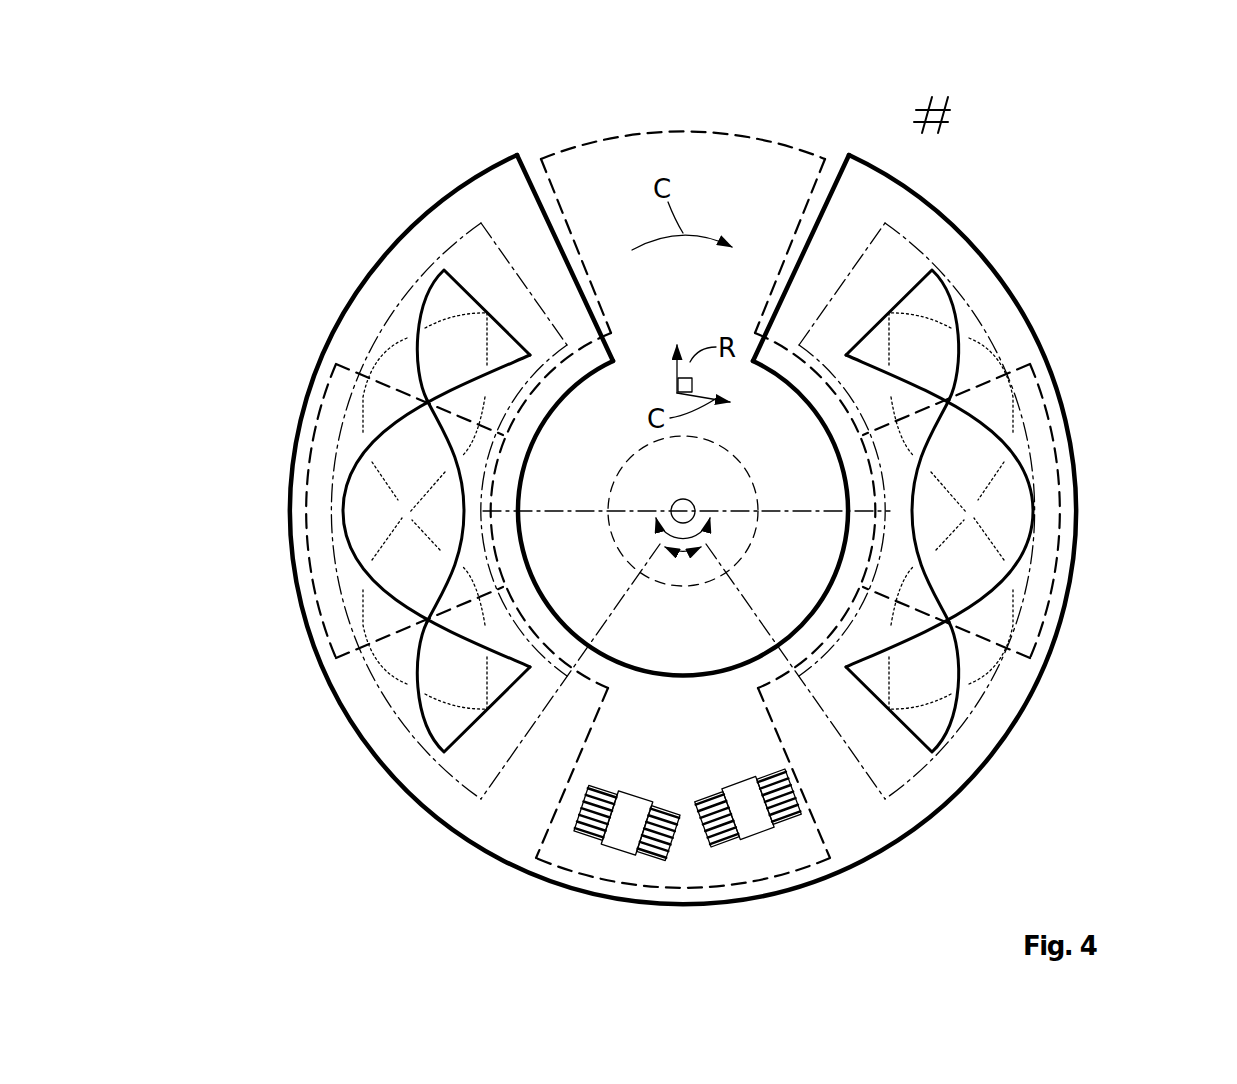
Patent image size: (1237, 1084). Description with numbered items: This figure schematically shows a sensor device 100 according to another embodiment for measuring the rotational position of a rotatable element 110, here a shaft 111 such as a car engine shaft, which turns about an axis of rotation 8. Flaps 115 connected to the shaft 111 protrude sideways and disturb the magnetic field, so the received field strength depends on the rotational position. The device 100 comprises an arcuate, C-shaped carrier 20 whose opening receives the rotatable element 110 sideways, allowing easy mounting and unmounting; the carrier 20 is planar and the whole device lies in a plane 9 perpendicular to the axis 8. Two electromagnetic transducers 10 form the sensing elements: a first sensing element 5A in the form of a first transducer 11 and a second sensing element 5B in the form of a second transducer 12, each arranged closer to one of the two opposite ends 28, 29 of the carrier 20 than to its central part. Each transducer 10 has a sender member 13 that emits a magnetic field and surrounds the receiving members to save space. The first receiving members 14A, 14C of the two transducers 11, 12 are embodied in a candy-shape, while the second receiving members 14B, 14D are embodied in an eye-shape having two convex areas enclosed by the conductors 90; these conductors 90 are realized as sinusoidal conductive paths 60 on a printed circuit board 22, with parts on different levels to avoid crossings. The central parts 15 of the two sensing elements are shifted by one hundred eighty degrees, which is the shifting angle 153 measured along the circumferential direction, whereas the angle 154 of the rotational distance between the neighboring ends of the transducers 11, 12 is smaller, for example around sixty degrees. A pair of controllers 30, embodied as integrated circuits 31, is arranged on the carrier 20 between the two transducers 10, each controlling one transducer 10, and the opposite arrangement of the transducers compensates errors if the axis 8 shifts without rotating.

The sensor device 100 is at (303, 82).
The first sensing element 5A is at (1032, 274).
The second sensing element 5B is at (377, 218).
The axis of rotation 8 is at (690, 527).
The plane 9 is at (970, 114).
The electromagnetic transducer 10 is at (683, 511).
The first transducer 11 is at (967, 712).
The second transducer 12 is at (468, 780).
The sender member 13 is at (483, 222).
The first receiving member of first transducer 14A is at (958, 308).
The second receiving member of first transducer 14B is at (1012, 395).
The first receiving member of second transducer 14C is at (415, 310).
The second receiving member of second transducer 14D is at (358, 410).
The central part 15 is at (525, 505).
The arcuate carrier 20 is at (512, 170).
The printed circuit board 22 is at (385, 280).
The end of arcuate carrier 28 is at (850, 150).
The end of arcuate carrier 29 is at (547, 141).
The controller 30 is at (622, 838).
The integrated circuit 31 is at (752, 822).
The conductive path 60 is at (960, 278).
The conductor 90 is at (477, 578).
The rotatable element 110 is at (748, 153).
The shaft 111 is at (708, 527).
The flap 115 is at (787, 173).
The shifting angle 153 is at (712, 518).
The angle of rotational distance 154 is at (678, 551).